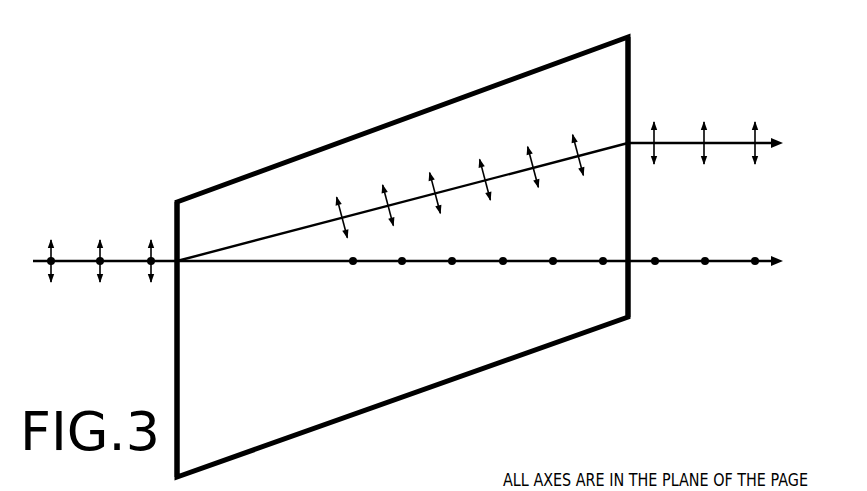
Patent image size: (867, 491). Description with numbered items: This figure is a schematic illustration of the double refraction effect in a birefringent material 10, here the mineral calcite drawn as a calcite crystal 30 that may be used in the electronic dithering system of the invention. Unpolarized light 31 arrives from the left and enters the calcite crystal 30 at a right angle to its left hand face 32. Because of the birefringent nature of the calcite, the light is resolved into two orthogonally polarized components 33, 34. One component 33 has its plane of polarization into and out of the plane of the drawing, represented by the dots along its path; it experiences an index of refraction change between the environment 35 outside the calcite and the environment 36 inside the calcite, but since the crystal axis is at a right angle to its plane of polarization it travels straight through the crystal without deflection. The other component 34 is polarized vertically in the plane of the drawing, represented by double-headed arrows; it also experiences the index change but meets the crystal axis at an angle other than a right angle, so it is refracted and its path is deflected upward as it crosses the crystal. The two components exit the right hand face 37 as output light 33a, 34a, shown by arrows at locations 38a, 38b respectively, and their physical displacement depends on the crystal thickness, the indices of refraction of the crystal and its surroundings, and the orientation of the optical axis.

The birefringent material 10 is at (348, 110).
The calcite crystal 30 is at (293, 157).
The unpolarized light 31 is at (73, 263).
The left hand face 32 is at (175, 343).
The polarized light component 33 is at (259, 263).
The output light 33a is at (676, 262).
The polarized light component 34 is at (313, 224).
The output light 34a is at (677, 147).
The environment outside the calcite 35 is at (96, 281).
The environment inside the calcite 36 is at (282, 364).
The right hand face 37 is at (632, 58).
The location of output light 38a is at (790, 232).
The location of output light 38b is at (763, 148).